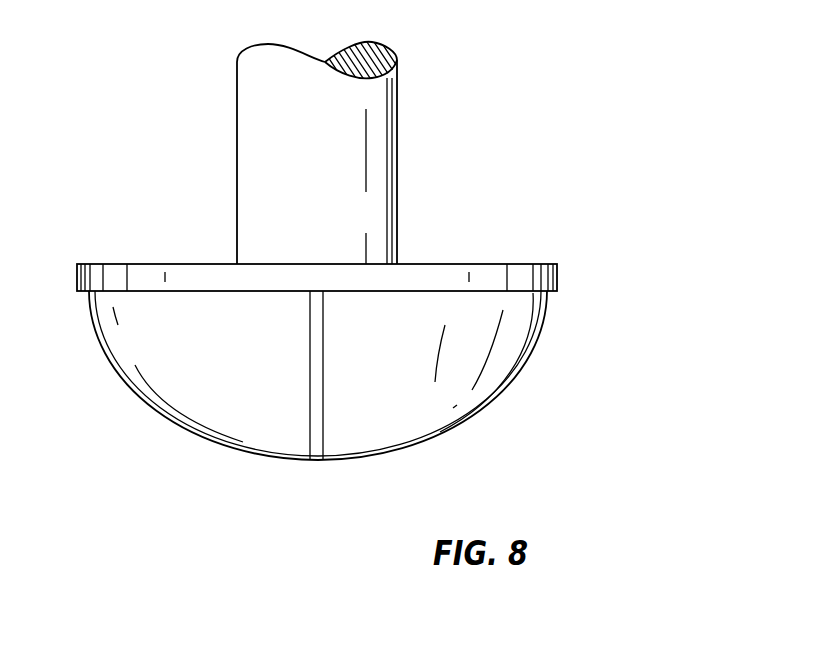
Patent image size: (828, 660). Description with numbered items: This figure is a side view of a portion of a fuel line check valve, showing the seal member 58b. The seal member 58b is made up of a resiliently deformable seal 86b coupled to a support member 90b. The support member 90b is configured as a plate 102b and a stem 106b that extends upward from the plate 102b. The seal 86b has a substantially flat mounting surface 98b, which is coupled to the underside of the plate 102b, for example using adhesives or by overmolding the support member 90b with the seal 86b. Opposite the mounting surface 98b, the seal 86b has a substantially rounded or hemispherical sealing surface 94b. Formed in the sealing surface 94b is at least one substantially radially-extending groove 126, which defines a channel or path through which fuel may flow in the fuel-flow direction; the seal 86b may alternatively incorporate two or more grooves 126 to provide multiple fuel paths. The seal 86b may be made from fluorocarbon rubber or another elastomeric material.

The seal member 58b is at (541, 142).
The stem 106b is at (248, 123).
The support member 90b is at (398, 172).
The plate 102b is at (182, 275).
The mounting surface 98b is at (480, 289).
The seal 86b is at (213, 408).
The sealing surface 94b is at (435, 433).
The groove 126 is at (310, 383).